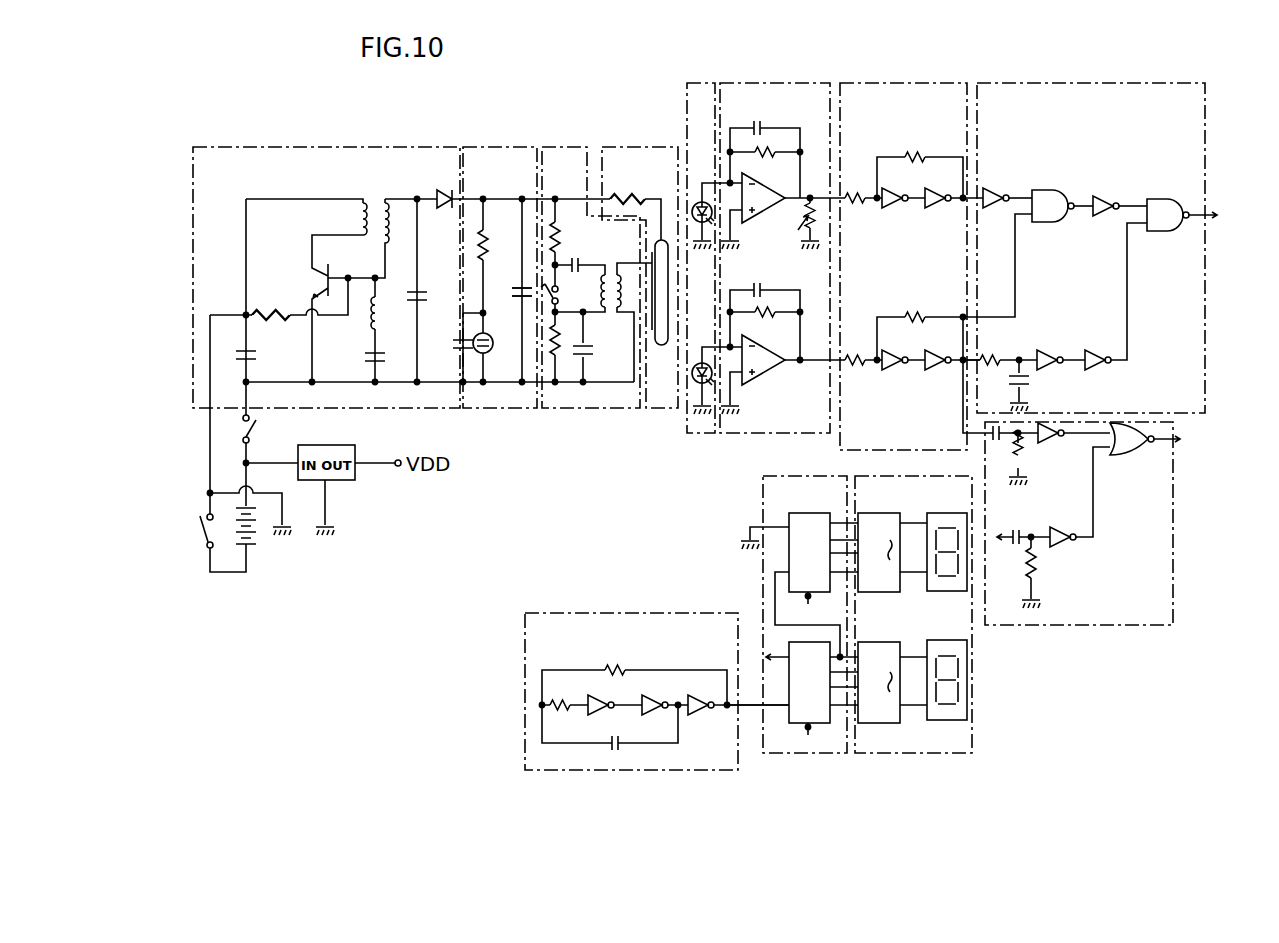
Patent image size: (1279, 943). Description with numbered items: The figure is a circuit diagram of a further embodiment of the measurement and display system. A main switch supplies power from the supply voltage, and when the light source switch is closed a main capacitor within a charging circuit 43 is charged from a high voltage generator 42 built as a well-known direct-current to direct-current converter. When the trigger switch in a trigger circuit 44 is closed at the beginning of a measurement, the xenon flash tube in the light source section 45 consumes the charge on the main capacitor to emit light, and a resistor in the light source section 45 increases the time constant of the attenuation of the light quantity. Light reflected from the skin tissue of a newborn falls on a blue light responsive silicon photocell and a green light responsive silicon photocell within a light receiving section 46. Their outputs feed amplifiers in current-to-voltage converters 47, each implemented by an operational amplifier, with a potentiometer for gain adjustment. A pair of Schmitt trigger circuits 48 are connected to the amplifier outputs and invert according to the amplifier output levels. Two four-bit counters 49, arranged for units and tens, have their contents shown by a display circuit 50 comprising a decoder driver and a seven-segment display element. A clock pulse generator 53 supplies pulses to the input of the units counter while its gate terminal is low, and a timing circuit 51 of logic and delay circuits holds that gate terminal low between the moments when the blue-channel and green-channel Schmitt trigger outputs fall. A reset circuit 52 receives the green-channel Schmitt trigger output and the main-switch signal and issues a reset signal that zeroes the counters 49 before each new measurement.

The high voltage generator 42 is at (320, 147).
The charging circuit 43 is at (517, 147).
The trigger circuit 44 is at (570, 147).
The light source section 45 is at (646, 147).
The light receiving section 46 is at (702, 83).
The current-to-voltage converters 47 is at (778, 83).
The Schmitt trigger circuits 48 is at (900, 83).
The 4-bit counters 49 is at (763, 495).
The display circuit 50 is at (915, 753).
The timing circuit 51 is at (1050, 83).
The reset circuit 52 is at (1175, 535).
The clock pulse generator 53 is at (637, 613).